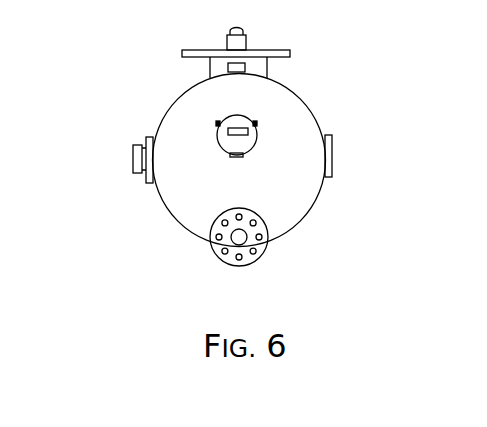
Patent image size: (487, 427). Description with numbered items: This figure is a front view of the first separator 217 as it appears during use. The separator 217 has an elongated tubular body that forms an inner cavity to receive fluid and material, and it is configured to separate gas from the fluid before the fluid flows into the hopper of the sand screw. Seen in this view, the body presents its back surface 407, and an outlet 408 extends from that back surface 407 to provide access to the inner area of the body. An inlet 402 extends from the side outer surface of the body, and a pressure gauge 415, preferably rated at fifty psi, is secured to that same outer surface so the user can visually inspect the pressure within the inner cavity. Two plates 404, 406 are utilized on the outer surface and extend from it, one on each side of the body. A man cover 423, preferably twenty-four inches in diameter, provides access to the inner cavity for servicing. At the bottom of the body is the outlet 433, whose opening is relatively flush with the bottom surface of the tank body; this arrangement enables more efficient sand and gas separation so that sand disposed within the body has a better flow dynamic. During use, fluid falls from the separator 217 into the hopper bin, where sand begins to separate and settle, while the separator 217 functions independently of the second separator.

The first separator 217 is at (117, 93).
The inlet 402 is at (248, 39).
The pressure gauge 415 is at (246, 66).
The back surface 407 is at (299, 125).
The plate 404 is at (332, 155).
The man cover 423 is at (133, 154).
The plate 406 is at (148, 182).
The outlet 408 is at (252, 150).
The outlet 433 is at (262, 255).